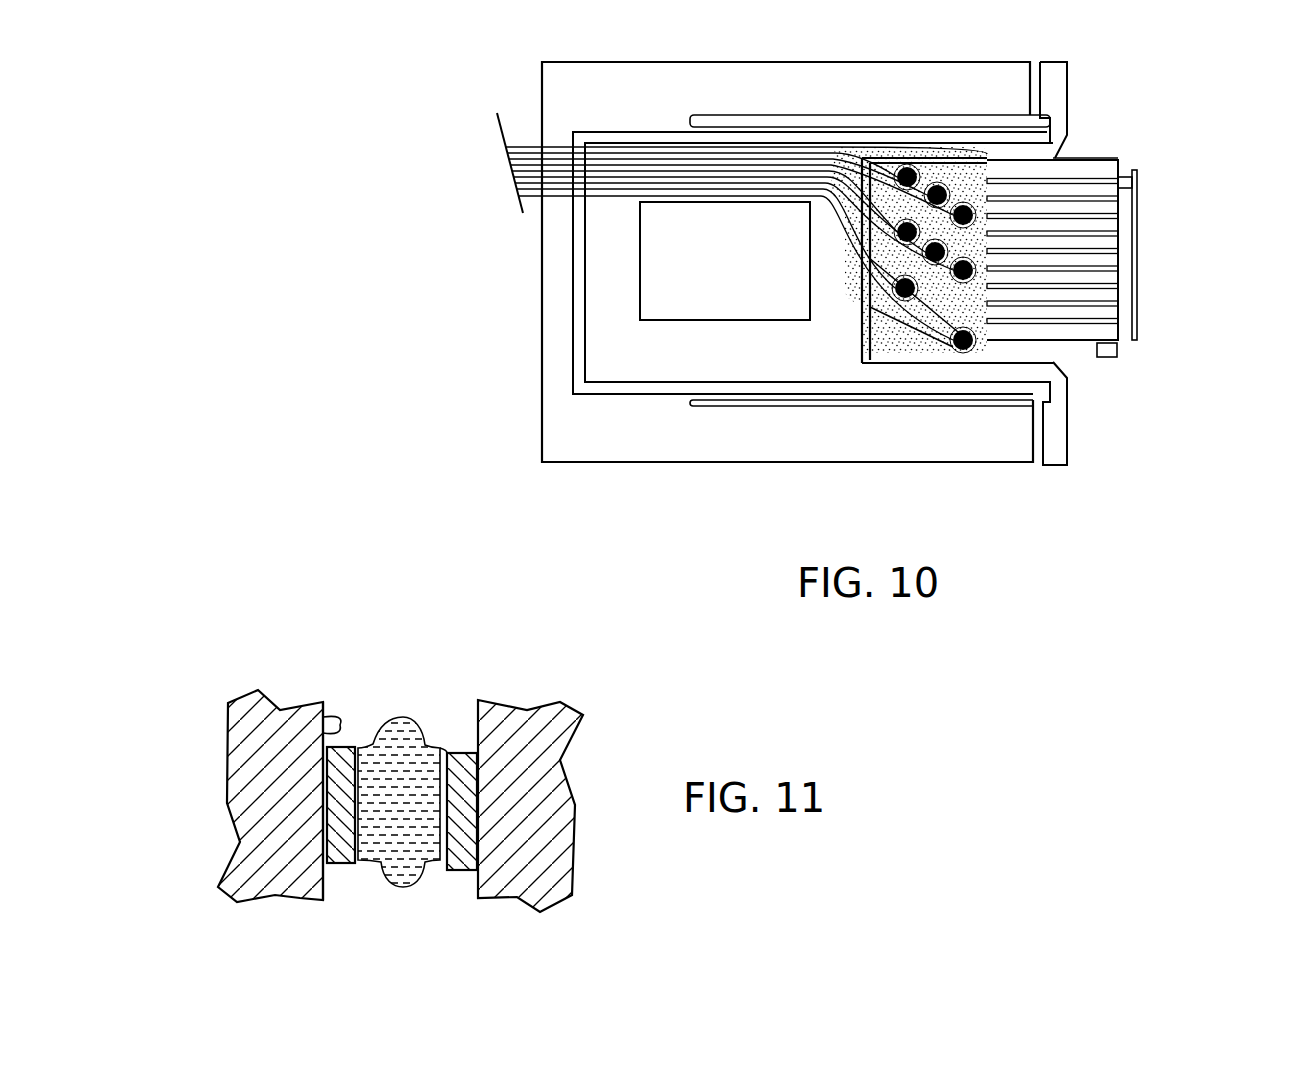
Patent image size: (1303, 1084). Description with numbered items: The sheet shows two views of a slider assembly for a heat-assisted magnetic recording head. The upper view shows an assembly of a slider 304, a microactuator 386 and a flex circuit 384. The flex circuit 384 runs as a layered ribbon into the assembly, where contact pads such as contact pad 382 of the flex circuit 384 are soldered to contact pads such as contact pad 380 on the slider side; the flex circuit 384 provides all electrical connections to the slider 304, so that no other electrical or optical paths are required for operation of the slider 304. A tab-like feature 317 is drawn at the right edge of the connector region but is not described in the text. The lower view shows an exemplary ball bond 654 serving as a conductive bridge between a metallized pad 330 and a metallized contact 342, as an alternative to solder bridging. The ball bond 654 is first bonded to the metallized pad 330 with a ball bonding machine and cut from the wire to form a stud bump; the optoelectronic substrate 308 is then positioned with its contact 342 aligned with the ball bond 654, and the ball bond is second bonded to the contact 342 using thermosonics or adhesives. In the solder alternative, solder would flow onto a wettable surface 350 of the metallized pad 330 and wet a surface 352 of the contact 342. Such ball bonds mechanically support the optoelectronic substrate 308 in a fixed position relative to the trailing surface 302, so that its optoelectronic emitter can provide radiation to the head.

In FIG. 11, the trailing surface 302 is at (320, 717).
In FIG. 10, the slider 304 is at (1105, 158).
In FIG. 11, the slider 304 is at (237, 765).
In FIG. 10, the optoelectronic substrate 308 is at (1138, 237).
In FIG. 11, the optoelectronic substrate 308 is at (570, 758).
In FIG. 10, the connector tab 317 is at (1093, 358).
In FIG. 11, the metallized pad 330 is at (337, 830).
In FIG. 11, the metallized contact 342 is at (470, 843).
In FIG. 11, the wettable surface 350 is at (373, 748).
In FIG. 11, the surface of contact 352 is at (428, 750).
In FIG. 10, the contact pad 380 is at (973, 327).
In FIG. 10, the contact pad of flex circuit 382 is at (950, 347).
In FIG. 10, the flex circuit 384 is at (610, 197).
In FIG. 10, the microactuator 386 is at (837, 462).
In FIG. 11, the ball bond 654 is at (395, 887).